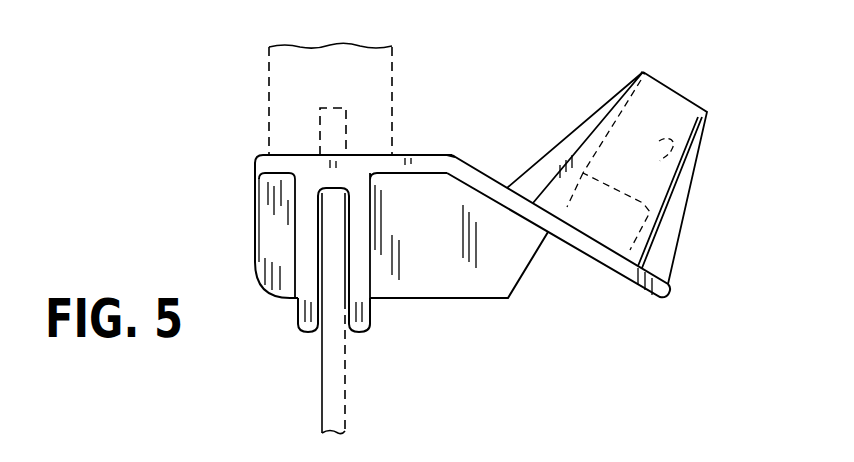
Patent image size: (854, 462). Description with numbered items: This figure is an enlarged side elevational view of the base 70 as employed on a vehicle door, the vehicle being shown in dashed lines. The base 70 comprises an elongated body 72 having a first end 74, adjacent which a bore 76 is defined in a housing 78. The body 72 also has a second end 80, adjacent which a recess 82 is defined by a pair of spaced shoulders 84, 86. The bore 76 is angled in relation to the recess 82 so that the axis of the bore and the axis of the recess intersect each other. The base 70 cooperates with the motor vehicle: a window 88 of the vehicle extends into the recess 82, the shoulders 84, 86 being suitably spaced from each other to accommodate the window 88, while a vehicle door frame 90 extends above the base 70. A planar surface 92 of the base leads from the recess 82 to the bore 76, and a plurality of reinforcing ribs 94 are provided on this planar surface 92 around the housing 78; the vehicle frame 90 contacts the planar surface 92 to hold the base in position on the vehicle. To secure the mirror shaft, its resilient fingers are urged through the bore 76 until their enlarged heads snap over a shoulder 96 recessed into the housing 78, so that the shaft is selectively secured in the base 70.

The base 70 is at (252, 192).
The elongated body 72 is at (443, 285).
The first end 74 is at (627, 278).
The bore 76 is at (680, 170).
The housing 78 is at (643, 78).
The second end 80 is at (287, 300).
The recess 82 is at (348, 300).
The shoulder 84 is at (310, 237).
The shoulder 86 is at (360, 239).
The window 88 is at (343, 400).
The vehicle door frame 90 is at (283, 112).
The planar surface 92 is at (447, 154).
The reinforcing ribs 94 is at (670, 223).
The shoulder 96 is at (645, 212).